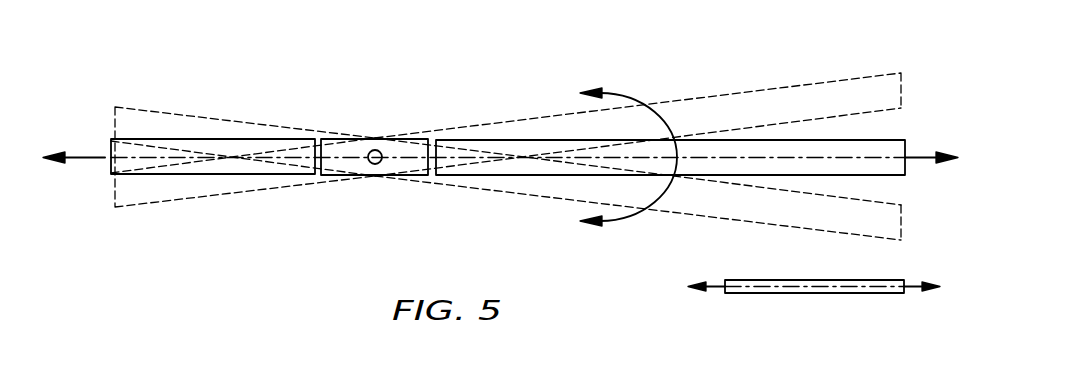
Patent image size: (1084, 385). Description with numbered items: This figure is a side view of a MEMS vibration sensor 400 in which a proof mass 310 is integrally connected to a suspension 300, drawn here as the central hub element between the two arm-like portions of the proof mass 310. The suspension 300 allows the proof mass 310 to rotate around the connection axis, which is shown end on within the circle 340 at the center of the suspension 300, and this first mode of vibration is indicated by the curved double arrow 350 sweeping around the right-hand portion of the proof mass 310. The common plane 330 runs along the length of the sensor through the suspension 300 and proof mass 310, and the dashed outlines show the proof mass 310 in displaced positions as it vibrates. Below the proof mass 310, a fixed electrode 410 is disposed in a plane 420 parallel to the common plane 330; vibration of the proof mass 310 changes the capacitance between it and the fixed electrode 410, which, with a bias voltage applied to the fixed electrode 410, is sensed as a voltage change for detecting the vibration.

The MEMS vibration sensor 400 is at (269, 78).
The suspension 300 is at (372, 124).
The proof mass 310 is at (715, 113).
The common plane 330 is at (86, 155).
The circle 340 is at (377, 165).
The curved double arrow 350 is at (642, 103).
The fixed electrode 410 is at (800, 294).
The plane 420 is at (913, 291).